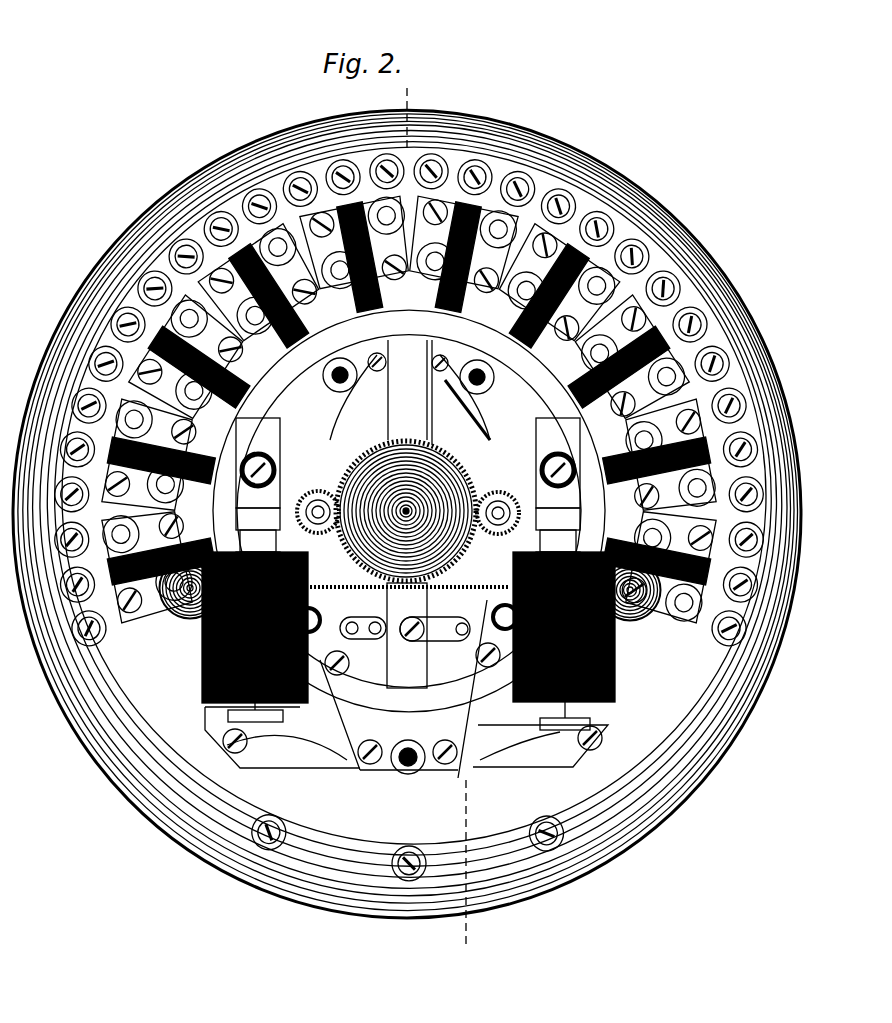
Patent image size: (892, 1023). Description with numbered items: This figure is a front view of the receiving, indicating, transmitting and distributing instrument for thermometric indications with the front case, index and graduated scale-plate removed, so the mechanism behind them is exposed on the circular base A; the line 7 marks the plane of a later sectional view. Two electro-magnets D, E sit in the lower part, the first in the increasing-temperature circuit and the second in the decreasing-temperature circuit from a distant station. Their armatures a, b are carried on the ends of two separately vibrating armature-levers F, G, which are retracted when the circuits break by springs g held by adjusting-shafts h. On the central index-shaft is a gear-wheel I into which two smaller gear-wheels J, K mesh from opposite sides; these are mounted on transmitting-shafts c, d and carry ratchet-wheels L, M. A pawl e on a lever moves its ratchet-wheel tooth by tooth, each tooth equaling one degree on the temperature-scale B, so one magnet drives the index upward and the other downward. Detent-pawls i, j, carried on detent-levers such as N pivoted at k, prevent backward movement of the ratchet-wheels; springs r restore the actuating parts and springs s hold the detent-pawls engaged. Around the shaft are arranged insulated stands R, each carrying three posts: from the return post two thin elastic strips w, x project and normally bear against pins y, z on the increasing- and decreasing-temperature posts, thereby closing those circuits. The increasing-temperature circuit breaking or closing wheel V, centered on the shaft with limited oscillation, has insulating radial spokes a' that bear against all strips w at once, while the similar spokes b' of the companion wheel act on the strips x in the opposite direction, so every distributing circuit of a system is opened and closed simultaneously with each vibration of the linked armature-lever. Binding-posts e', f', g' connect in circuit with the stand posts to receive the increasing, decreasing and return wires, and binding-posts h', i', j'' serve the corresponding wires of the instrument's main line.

The section line 7 is at (453, 80).
The base A is at (407, 514).
The actuating pawl e is at (409, 400).
The binding-post h' is at (275, 832).
The terminal screw j'' is at (417, 863).
The binding-post i' is at (549, 833).
The stand R is at (409, 409).
The engaging-spring s is at (400, 319).
The circuit-closing elastic strip w is at (393, 239).
The circuit-closing elastic strip x is at (441, 268).
The pin y is at (369, 219).
The pin z is at (378, 284).
The radial spoke b' is at (403, 308).
The radial spoke a' is at (407, 351).
The spring r is at (381, 287).
The contact arm t is at (388, 322).
The contact arm u is at (365, 276).
The binding-post f' is at (405, 478).
The binding-post g' is at (405, 579).
The increasing-temperature circuit breaking or closing wheel V is at (409, 511).
The gear-wheel I is at (406, 511).
The electro-magnet E is at (404, 512).
The gear-wheel K is at (314, 498).
The ratchet-wheel L is at (499, 513).
The gear-wheel J is at (500, 500).
The ratchet-wheel M is at (366, 514).
The detent-lever N is at (390, 397).
The detent-pawl j is at (354, 411).
The detent-pawl i is at (463, 409).
The pivot k is at (408, 457).
The electro-magnet D is at (245, 627).
The temperature-scale B is at (575, 627).
The adjusting-shaft h is at (406, 606).
The armature-lever F is at (282, 715).
The armature-lever G is at (483, 689).
The armature a is at (247, 713).
The armature b is at (582, 717).
The spring g is at (410, 598).
The transmitting-shaft d is at (341, 641).
The transmitting-shaft c is at (458, 636).